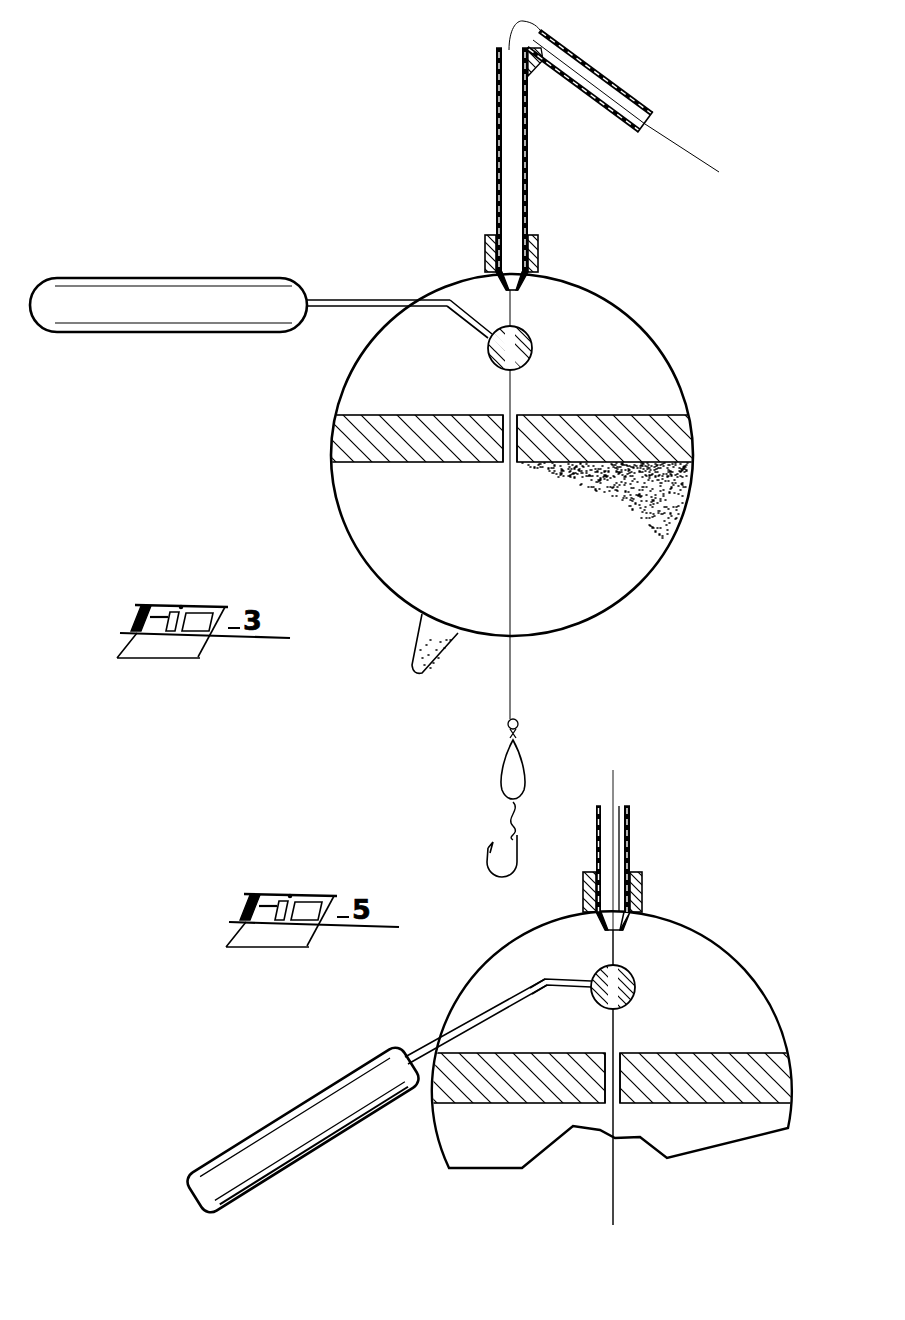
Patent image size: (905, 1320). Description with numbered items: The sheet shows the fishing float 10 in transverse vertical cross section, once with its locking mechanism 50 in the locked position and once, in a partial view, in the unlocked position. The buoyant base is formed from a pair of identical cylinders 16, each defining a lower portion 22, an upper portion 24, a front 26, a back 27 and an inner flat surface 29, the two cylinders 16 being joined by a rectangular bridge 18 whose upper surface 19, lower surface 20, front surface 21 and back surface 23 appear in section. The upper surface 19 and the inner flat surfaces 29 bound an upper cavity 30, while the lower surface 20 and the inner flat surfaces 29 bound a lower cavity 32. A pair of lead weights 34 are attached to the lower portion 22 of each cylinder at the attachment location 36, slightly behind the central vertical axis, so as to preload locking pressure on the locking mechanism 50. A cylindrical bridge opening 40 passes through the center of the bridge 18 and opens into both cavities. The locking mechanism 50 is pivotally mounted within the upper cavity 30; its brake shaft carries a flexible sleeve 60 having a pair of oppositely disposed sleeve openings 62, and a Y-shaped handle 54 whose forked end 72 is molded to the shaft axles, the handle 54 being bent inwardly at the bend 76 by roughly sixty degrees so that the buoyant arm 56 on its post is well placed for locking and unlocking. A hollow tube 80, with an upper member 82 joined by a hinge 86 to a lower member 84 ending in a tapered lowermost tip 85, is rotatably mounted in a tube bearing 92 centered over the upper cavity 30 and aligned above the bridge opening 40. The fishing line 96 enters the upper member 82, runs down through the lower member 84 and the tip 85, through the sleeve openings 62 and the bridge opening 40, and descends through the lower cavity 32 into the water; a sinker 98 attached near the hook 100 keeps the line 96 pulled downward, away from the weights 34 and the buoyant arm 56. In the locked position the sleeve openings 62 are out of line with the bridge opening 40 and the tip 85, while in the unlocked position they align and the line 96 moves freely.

In FIG. 3, the fishing float 10 is at (254, 115).
In FIG. 3, the cylinders 16 is at (598, 330).
In FIG. 3, the bridge 18 is at (338, 438).
In FIG. 5, the bridge 18 is at (727, 1093).
In FIG. 3, the upper surface 19 is at (668, 415).
In FIG. 3, the lower surface 20 is at (383, 463).
In FIG. 3, the front surface 21 is at (694, 453).
In FIG. 3, the lower portion 22 is at (527, 650).
In FIG. 3, the back surface 23 is at (335, 442).
In FIG. 3, the upper portion 24 is at (528, 153).
In FIG. 3, the front 26 is at (700, 502).
In FIG. 3, the back 27 is at (330, 470).
In FIG. 3, the inner flat surface 29 is at (623, 574).
In FIG. 3, the upper cavity 30 is at (433, 357).
In FIG. 3, the lower cavity 32 is at (468, 507).
In FIG. 3, the weights 34 is at (417, 648).
In FIG. 3, the weight attachment location 36 is at (470, 648).
In FIG. 3, the bridge opening 40 is at (520, 410).
In FIG. 5, the bridge opening 40 is at (617, 1053).
In FIG. 3, the locking mechanism 50 is at (261, 331).
In FIG. 3, the Y-shaped handle 54 is at (379, 287).
In FIG. 5, the Y-shaped handle 54 is at (498, 971).
In FIG. 3, the buoyant arm 56 is at (85, 335).
In FIG. 5, the buoyant arm 56 is at (297, 1104).
In FIG. 3, the sleeve 60 is at (550, 324).
In FIG. 5, the sleeve 60 is at (662, 960).
In FIG. 3, the sleeve openings 62 is at (515, 320).
In FIG. 5, the sleeve openings 62 is at (607, 967).
In FIG. 3, the forked end 72 is at (488, 292).
In FIG. 5, the forked end 72 is at (545, 978).
In FIG. 3, the inward bend 76 is at (458, 312).
In FIG. 3, the hollow tube 80 is at (492, 160).
In FIG. 5, the hollow tube 80 is at (613, 845).
In FIG. 3, the upper member 82 is at (604, 72).
In FIG. 3, the lower member 84 is at (495, 124).
In FIG. 3, the lowermost tip 85 is at (527, 290).
In FIG. 3, the hinge 86 is at (540, 62).
In FIG. 3, the tube bearing 92 is at (530, 232).
In FIG. 5, the tube bearing 92 is at (637, 885).
In FIG. 3, the fishing line 96 is at (697, 165).
In FIG. 5, the fishing line 96 is at (610, 1195).
In FIG. 3, the sinker 98 is at (528, 775).
In FIG. 3, the hook 100 is at (486, 852).